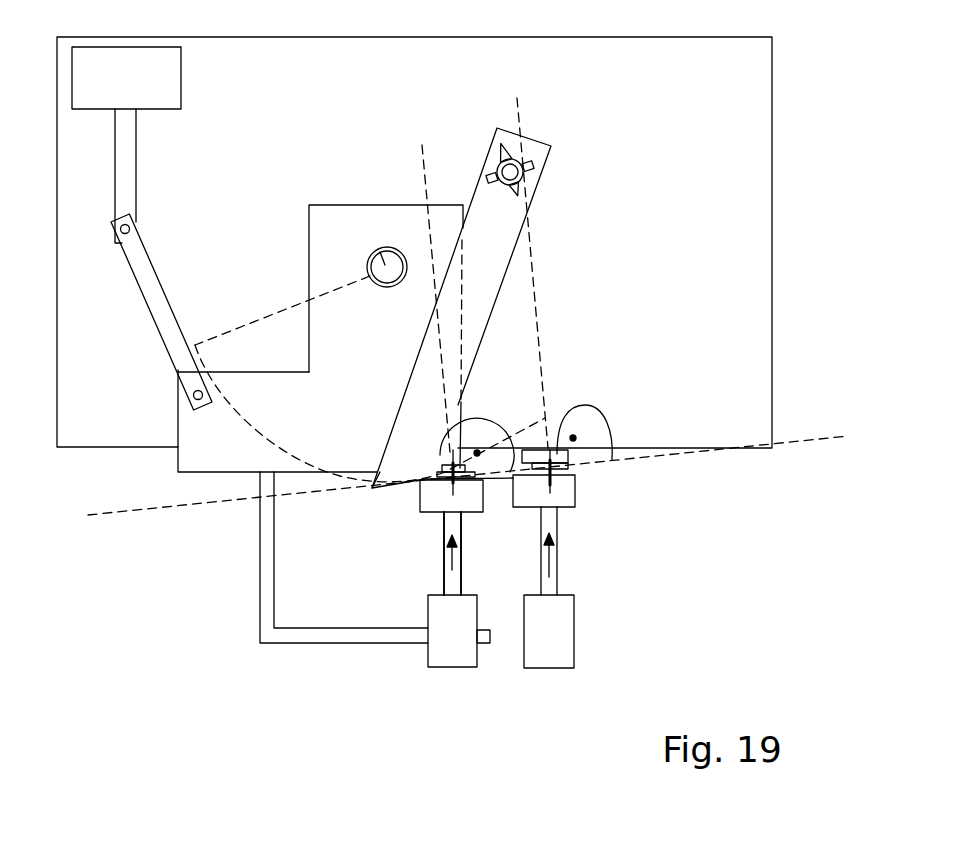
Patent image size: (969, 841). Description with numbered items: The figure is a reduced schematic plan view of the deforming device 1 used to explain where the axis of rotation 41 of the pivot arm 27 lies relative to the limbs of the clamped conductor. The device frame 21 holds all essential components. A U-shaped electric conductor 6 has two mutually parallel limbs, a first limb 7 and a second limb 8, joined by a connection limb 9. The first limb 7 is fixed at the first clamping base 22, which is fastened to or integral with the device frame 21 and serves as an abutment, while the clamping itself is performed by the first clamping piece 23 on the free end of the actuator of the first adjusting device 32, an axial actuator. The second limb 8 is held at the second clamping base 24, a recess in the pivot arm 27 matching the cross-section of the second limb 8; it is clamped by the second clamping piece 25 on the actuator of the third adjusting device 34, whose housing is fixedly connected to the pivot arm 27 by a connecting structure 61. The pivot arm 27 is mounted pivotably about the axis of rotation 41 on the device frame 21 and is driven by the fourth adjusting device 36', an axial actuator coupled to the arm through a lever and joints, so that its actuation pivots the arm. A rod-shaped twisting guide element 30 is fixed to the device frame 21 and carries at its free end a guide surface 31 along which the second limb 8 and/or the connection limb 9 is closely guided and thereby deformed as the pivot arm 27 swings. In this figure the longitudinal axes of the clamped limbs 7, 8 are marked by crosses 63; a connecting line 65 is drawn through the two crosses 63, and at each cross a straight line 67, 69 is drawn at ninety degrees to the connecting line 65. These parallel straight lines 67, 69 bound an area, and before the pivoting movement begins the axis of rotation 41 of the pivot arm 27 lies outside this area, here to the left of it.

The deforming device 1 is at (140, 558).
The device frame 21 is at (414, 242).
The first clamping base 22 is at (572, 456).
The first clamping piece 23 is at (570, 507).
The second clamping base 24 is at (441, 470).
The second clamping piece 25 is at (430, 513).
The electric conductor 6 is at (503, 490).
The connection limb 9 is at (452, 553).
The first limb 7 is at (576, 477).
The second limb 8 is at (455, 487).
The pivot arm 27 is at (222, 473).
The twisting guide element 30 is at (542, 170).
The guide surface 31 is at (375, 490).
The first adjusting device 32 is at (549, 631).
The third adjusting device 34 is at (459, 631).
The fourth adjusting device 36' is at (126, 145).
The axis of rotation 41 is at (382, 252).
The connecting structure 61 is at (260, 595).
The crosses 63 is at (568, 412).
The connecting line 65 is at (793, 442).
The straight line 67 is at (425, 178).
The straight line 69 is at (520, 118).